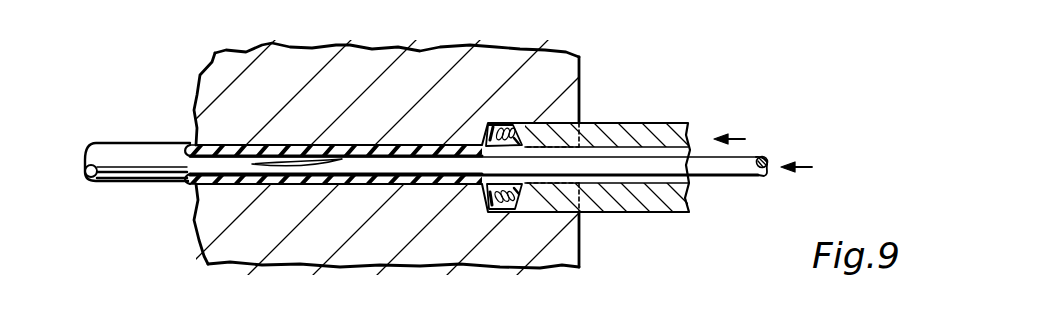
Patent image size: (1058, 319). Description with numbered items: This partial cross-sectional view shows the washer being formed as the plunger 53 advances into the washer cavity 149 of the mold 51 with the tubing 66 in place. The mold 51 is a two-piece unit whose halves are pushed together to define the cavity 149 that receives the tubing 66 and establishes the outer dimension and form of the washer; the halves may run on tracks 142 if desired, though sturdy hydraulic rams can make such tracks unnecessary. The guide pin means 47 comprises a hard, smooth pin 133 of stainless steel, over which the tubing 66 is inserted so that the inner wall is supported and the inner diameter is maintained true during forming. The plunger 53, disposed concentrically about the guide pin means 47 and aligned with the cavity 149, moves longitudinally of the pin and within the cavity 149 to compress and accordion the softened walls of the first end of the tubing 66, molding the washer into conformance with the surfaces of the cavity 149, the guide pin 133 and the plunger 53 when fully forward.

The tracks 142 is at (229, 5).
The guide pin 133 is at (273, 148).
The washer cavity 149 is at (463, 157).
The mold 51 is at (503, 62).
The plunger 53 is at (628, 126).
The guide pin means 47 is at (753, 156).
The tubing 66 is at (145, 184).